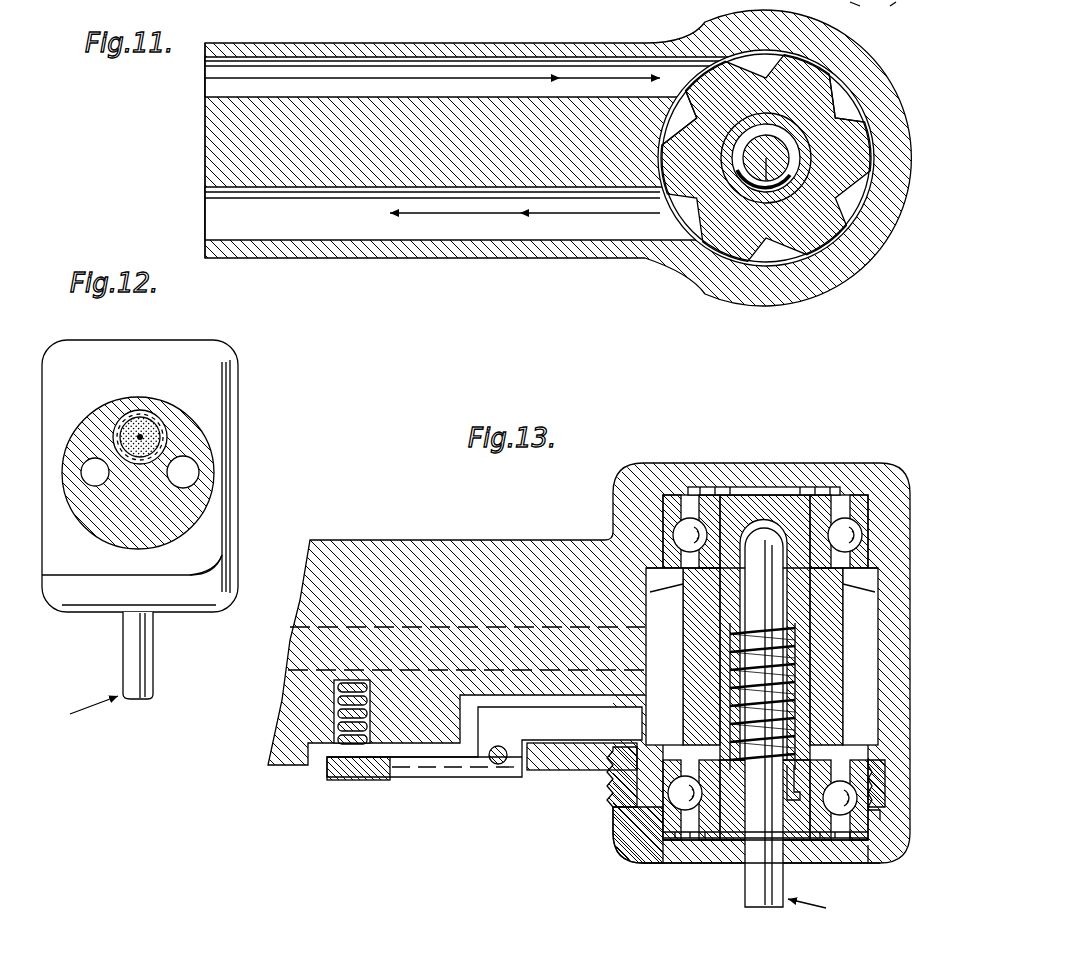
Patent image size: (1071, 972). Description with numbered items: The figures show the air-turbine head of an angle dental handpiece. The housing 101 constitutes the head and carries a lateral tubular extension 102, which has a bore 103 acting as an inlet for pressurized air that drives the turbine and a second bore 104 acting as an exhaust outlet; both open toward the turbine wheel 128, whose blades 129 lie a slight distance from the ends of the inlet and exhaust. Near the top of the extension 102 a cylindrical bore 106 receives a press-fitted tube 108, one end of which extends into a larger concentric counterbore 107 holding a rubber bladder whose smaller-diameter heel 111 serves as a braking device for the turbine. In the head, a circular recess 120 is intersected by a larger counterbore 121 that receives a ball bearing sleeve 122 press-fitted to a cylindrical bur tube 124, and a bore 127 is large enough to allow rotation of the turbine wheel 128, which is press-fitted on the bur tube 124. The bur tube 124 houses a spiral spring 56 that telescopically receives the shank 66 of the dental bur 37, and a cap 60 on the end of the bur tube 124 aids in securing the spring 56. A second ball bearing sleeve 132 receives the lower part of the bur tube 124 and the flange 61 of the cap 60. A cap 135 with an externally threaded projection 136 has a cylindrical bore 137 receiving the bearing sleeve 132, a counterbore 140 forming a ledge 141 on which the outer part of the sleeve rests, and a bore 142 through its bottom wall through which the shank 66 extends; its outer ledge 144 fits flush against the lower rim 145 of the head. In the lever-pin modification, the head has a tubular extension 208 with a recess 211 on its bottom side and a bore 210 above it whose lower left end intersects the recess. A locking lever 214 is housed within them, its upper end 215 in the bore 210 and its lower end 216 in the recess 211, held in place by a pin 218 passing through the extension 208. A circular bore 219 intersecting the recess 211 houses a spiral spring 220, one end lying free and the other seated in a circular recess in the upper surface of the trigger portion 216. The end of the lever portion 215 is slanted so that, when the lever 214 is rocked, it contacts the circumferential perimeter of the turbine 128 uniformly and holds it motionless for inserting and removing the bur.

In FIG. 11, the dental bur 37 is at (856, 6).
In FIG. 12, the dental bur 37 is at (78, 711).
In FIG. 13, the dental bur 37 is at (819, 907).
In FIG. 11, the spiral spring 56 is at (778, 188).
In FIG. 13, the spiral spring 56 is at (740, 610).
In FIG. 13, the cap 60 is at (708, 840).
In FIG. 13, the cylindrical flange 61 is at (796, 840).
In FIG. 11, the shank 66 is at (760, 175).
In FIG. 12, the shank 66 is at (125, 668).
In FIG. 13, the shank 66 is at (770, 597).
In FIG. 11, the housing 101 is at (722, 292).
In FIG. 12, the housing 101 is at (62, 352).
In FIG. 13, the housing 101 is at (660, 463).
In FIG. 11, the lateral tubular extension 102 is at (390, 43).
In FIG. 12, the lateral tubular extension 102 is at (182, 518).
In FIG. 11, the bore 103 is at (215, 90).
In FIG. 12, the bore 103 is at (95, 486).
In FIG. 13, the bore 103 is at (286, 654).
In FIG. 11, the second bore 104 is at (215, 205).
In FIG. 12, the second bore 104 is at (200, 472).
In FIG. 12, the cylindrical bore 106 is at (163, 436).
In FIG. 12, the counterbore 107 is at (170, 444).
In FIG. 12, the tube 108 is at (158, 413).
In FIG. 12, the heel 111 is at (142, 428).
In FIG. 13, the circular recess 120 is at (818, 492).
In FIG. 13, the counterbore 121 is at (868, 512).
In FIG. 13, the ball bearing sleeve 122 is at (862, 545).
In FIG. 11, the bur tube 124 is at (766, 182).
In FIG. 13, the bore 127 is at (868, 566).
In FIG. 11, the turbine wheel 128 is at (818, 198).
In FIG. 13, the turbine wheel 128 is at (876, 614).
In FIG. 11, the blades 129 is at (838, 108).
In FIG. 13, the blades 129 is at (862, 640).
In FIG. 13, the second ball bearing sleeve 132 is at (850, 762).
In FIG. 12, the cap 135 is at (76, 612).
In FIG. 13, the cap 135 is at (888, 865).
In FIG. 13, the externally threaded projection 136 is at (884, 768).
In FIG. 13, the cylindrical bore 137 is at (872, 826).
In FIG. 11, the counterbore 140 is at (908, 10).
In FIG. 13, the counterbore 140 is at (862, 862).
In FIG. 13, the ledge 141 is at (672, 862).
In FIG. 13, the bore 142 is at (748, 852).
In FIG. 12, the outer ledge 144 is at (222, 558).
In FIG. 13, the outer ledge 144 is at (884, 798).
In FIG. 12, the lower rim 145 is at (195, 612).
In FIG. 13, the lower rim 145 is at (640, 842).
In FIG. 13, the tubular extension 208 is at (386, 540).
In FIG. 13, the bore 210 is at (576, 745).
In FIG. 13, the recess 211 is at (334, 781).
In FIG. 13, the locking lever 214 is at (463, 760).
In FIG. 13, the upper end of the lever 215 is at (526, 772).
In FIG. 13, the lower end of the lever 216 is at (420, 779).
In FIG. 13, the pin 218 is at (497, 766).
In FIG. 13, the circular bore 219 is at (332, 740).
In FIG. 13, the spiral spring 220 is at (336, 712).